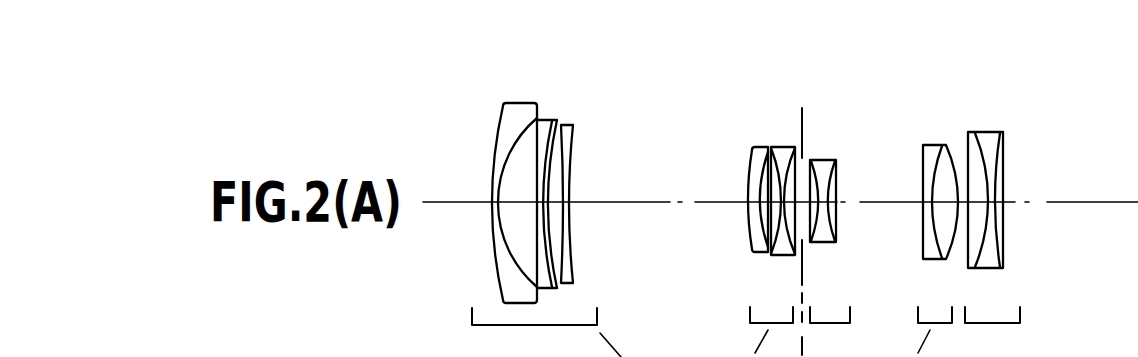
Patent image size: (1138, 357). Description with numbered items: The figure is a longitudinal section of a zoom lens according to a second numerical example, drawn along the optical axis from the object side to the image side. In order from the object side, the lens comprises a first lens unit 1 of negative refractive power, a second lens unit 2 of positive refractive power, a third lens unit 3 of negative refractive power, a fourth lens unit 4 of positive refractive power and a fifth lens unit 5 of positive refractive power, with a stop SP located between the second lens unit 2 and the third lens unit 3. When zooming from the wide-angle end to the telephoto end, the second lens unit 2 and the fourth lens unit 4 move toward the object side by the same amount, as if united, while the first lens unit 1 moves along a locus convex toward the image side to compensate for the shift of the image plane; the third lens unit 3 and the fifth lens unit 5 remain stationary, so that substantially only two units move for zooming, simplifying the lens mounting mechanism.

The first lens unit 1 is at (597, 98).
The second lens unit 2 is at (792, 121).
The third lens unit 3 is at (857, 138).
The fourth lens unit 4 is at (965, 126).
The fifth lens unit 5 is at (1017, 108).
The stop SP is at (803, 118).